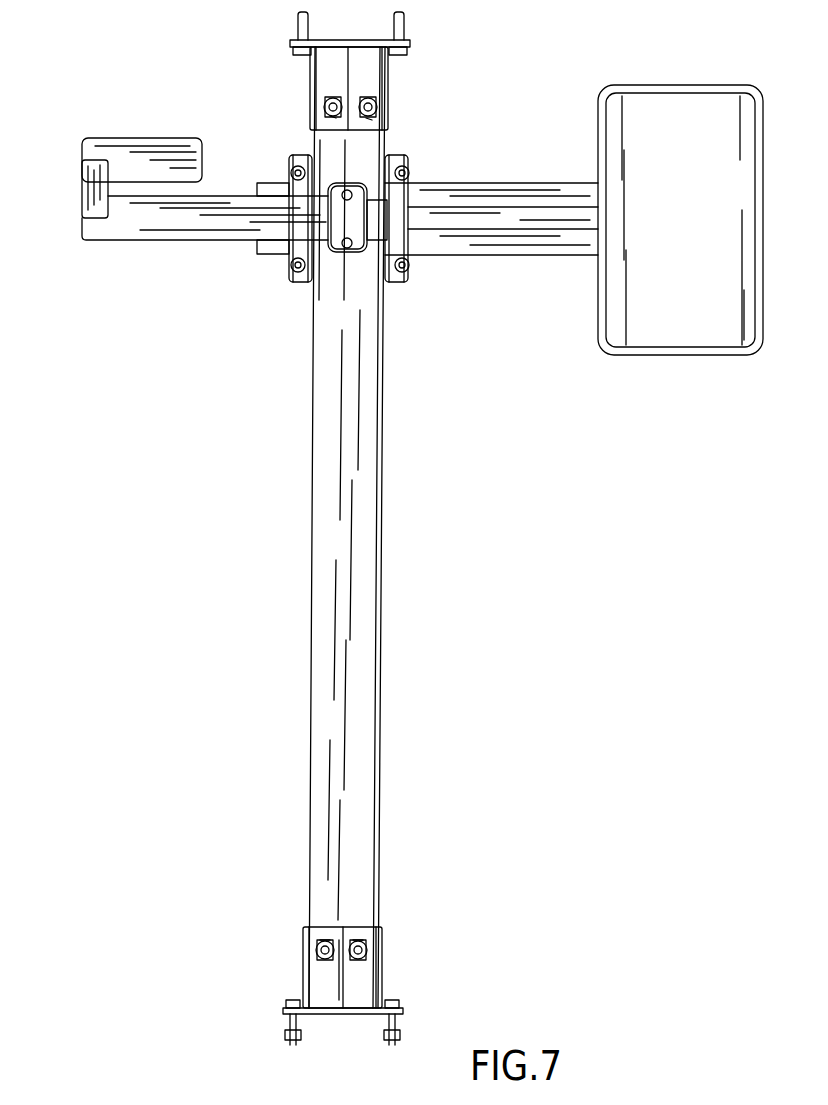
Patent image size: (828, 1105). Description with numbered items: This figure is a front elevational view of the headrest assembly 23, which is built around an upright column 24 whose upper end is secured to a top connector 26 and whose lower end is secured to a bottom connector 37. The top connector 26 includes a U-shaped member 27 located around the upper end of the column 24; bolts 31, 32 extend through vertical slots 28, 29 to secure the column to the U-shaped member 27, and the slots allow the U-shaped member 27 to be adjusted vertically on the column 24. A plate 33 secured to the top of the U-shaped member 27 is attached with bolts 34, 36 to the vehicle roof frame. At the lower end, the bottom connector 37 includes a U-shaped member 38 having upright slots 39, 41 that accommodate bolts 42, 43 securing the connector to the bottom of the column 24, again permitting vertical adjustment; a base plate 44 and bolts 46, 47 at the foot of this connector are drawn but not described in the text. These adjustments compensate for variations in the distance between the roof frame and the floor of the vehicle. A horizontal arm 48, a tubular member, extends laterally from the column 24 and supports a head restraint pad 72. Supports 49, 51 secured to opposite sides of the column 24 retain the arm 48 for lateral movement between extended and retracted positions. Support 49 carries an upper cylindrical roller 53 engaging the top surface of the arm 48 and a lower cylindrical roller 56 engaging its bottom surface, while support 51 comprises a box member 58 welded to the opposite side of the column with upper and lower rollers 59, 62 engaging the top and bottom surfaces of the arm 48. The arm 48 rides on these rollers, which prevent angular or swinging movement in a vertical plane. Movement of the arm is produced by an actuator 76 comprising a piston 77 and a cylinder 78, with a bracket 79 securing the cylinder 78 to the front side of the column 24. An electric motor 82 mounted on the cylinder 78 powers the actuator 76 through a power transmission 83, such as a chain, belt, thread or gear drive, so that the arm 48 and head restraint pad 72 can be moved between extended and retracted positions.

The headrest assembly 23 is at (205, 430).
The column 24 is at (366, 630).
The top connector 26 is at (424, 80).
The U-shaped member 27 is at (311, 70).
The vertical slot 28 is at (331, 100).
The vertical slot 29 is at (373, 118).
The bolt 31 is at (330, 114).
The bolt 32 is at (378, 106).
The plate 33 is at (342, 45).
The bolt 34 is at (298, 24).
The bolt 36 is at (404, 22).
The bottom connector 37 is at (427, 956).
The U-shaped member 38 is at (306, 960).
The upright slot 39 is at (324, 940).
The upright slot 41 is at (362, 940).
The bolt 42 is at (320, 957).
The bolt 43 is at (366, 958).
The base plate 44 is at (342, 1014).
The bolt 46 is at (292, 1041).
The bolt 47 is at (398, 1041).
The horizontal arm 48 is at (490, 242).
The support 49 is at (403, 290).
The support 51 is at (300, 292).
The upper cylindrical roller 53 is at (410, 172).
The lower cylindrical roller 56 is at (410, 265).
The box member 58 is at (284, 250).
The upper roller 59 is at (292, 170).
The lower roller 62 is at (291, 268).
The head restraint pad 72 is at (667, 330).
The actuator 76 is at (136, 256).
The piston 77 is at (530, 214).
The cylinder 78 is at (176, 228).
The bracket 79 is at (340, 250).
The electric motor 82 is at (160, 150).
The power transmission 83 is at (94, 196).